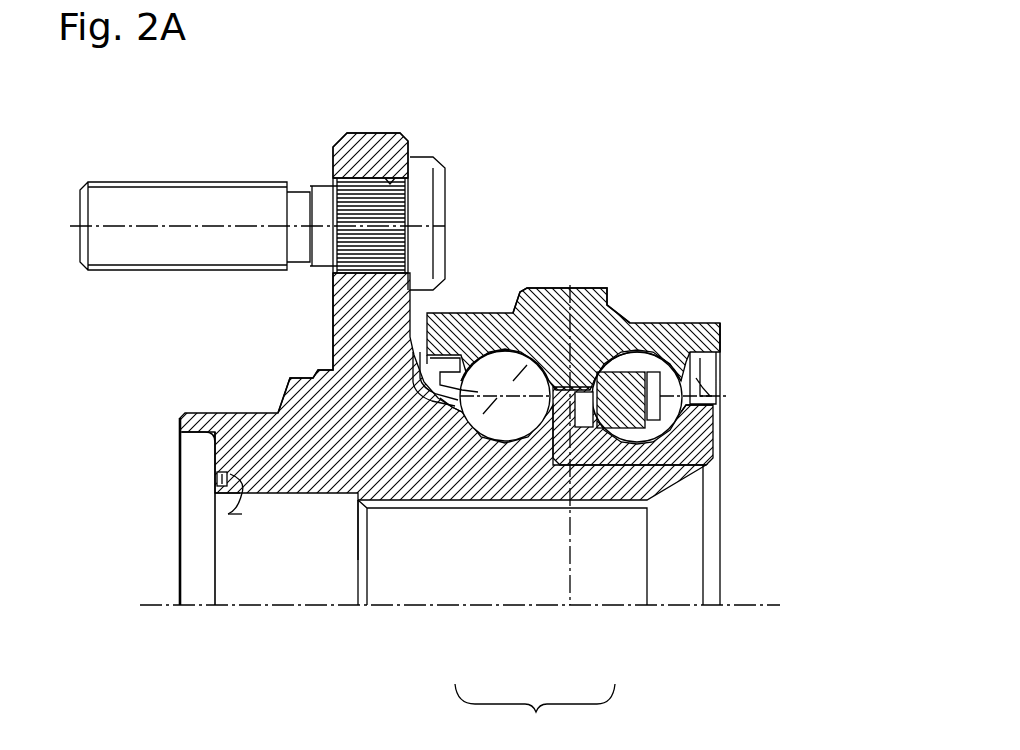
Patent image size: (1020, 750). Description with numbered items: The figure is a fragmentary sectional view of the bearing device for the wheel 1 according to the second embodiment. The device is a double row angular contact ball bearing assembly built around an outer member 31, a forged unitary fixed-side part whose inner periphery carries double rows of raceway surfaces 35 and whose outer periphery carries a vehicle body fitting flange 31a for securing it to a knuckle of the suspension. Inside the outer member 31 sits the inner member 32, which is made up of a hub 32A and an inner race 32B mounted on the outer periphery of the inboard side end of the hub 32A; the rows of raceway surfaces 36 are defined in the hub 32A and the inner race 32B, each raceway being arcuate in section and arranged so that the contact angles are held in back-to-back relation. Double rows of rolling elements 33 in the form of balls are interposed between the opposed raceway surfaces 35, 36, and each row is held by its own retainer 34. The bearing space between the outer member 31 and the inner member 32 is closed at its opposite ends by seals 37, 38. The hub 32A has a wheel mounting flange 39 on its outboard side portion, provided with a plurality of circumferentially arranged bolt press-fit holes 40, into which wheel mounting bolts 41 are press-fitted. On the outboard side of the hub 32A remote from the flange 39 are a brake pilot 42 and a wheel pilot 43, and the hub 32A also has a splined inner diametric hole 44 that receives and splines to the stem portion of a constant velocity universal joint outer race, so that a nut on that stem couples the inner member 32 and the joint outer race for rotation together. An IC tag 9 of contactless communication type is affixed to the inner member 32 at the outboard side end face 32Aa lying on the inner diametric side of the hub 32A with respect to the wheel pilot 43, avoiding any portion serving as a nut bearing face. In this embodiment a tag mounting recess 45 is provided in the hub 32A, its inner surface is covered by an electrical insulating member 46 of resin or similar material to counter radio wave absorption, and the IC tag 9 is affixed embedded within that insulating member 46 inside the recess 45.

The bearing device for the wheel 1 is at (750, 283).
The IC tag 9 is at (215, 485).
The outer member 31 is at (647, 322).
The vehicle body fitting flange 31a is at (545, 292).
The inner member 32 is at (535, 715).
The hub 32A is at (517, 485).
The outboard side end face 32Aa is at (220, 477).
The inner race 32B is at (613, 468).
The rolling elements 33 is at (435, 440).
The retainer 34 is at (606, 364).
The raceway surfaces 35 is at (490, 350).
The raceway surfaces 36 is at (505, 430).
The seal 37 is at (452, 358).
The seal 38 is at (722, 355).
The wheel mounting flange 39 is at (372, 143).
The bolt press-fit holes 40 is at (378, 177).
The wheel mounting bolts 41 is at (203, 188).
The brake pilot 42 is at (320, 370).
The wheel pilot 43 is at (208, 423).
The inner diametric hole 44 is at (362, 527).
The tag mounting recess 45 is at (240, 515).
The electrical insulating member 46 is at (230, 482).